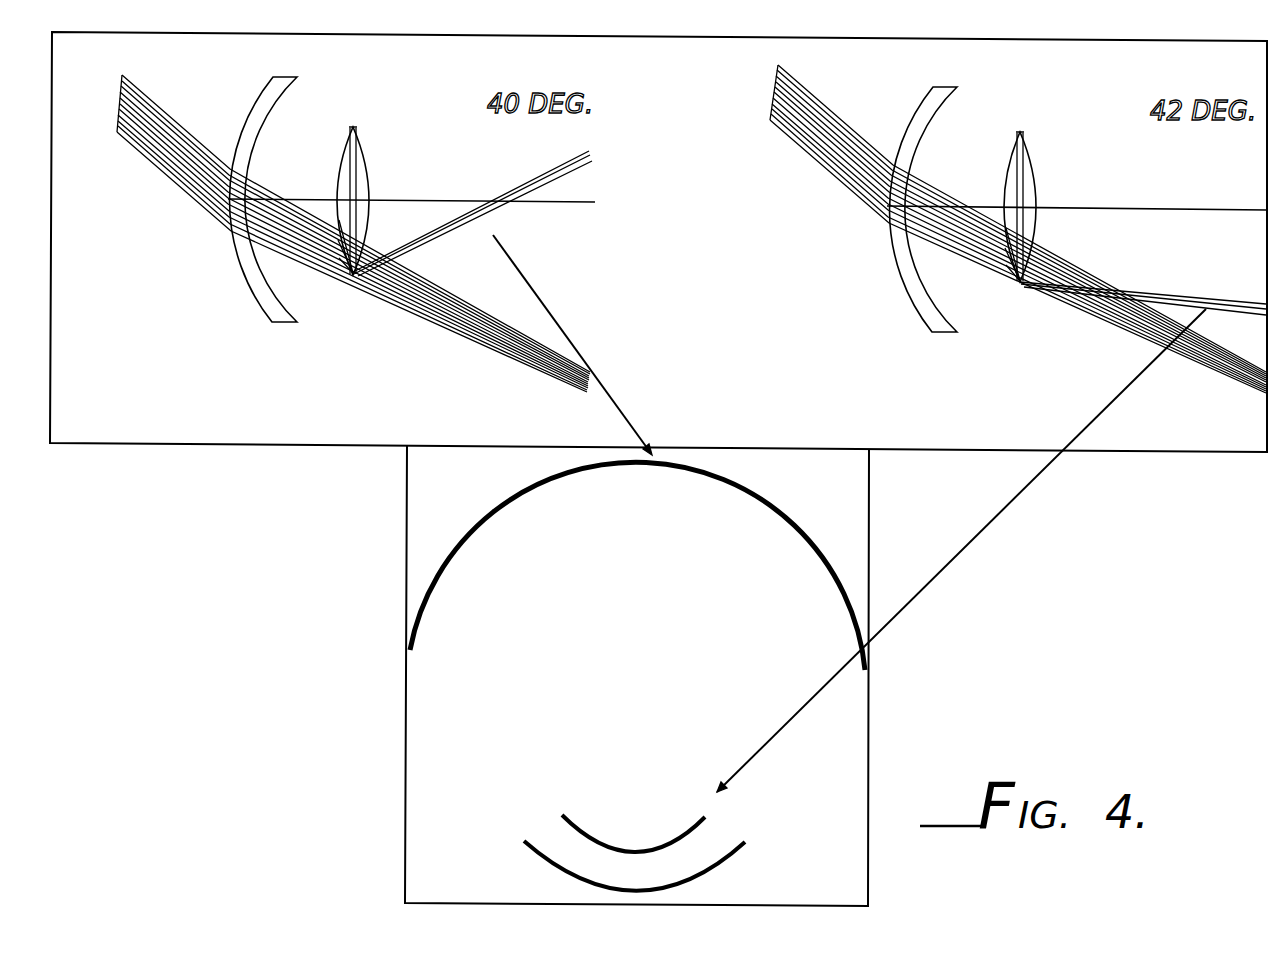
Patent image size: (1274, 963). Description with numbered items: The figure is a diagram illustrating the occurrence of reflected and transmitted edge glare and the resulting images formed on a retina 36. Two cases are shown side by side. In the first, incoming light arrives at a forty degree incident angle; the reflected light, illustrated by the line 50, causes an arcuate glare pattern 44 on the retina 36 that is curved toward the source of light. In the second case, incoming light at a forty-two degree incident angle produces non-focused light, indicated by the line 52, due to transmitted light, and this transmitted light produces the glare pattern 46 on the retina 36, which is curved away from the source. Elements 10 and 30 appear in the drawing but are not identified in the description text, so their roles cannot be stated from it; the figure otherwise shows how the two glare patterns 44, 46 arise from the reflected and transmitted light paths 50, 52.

The lens 10 is at (370, 158).
The light beam 30 is at (183, 163).
The retina 36 is at (848, 727).
The glare pattern 44 is at (633, 422).
The glare pattern 46 is at (948, 563).
The line 50 is at (438, 233).
The line 52 is at (1155, 296).